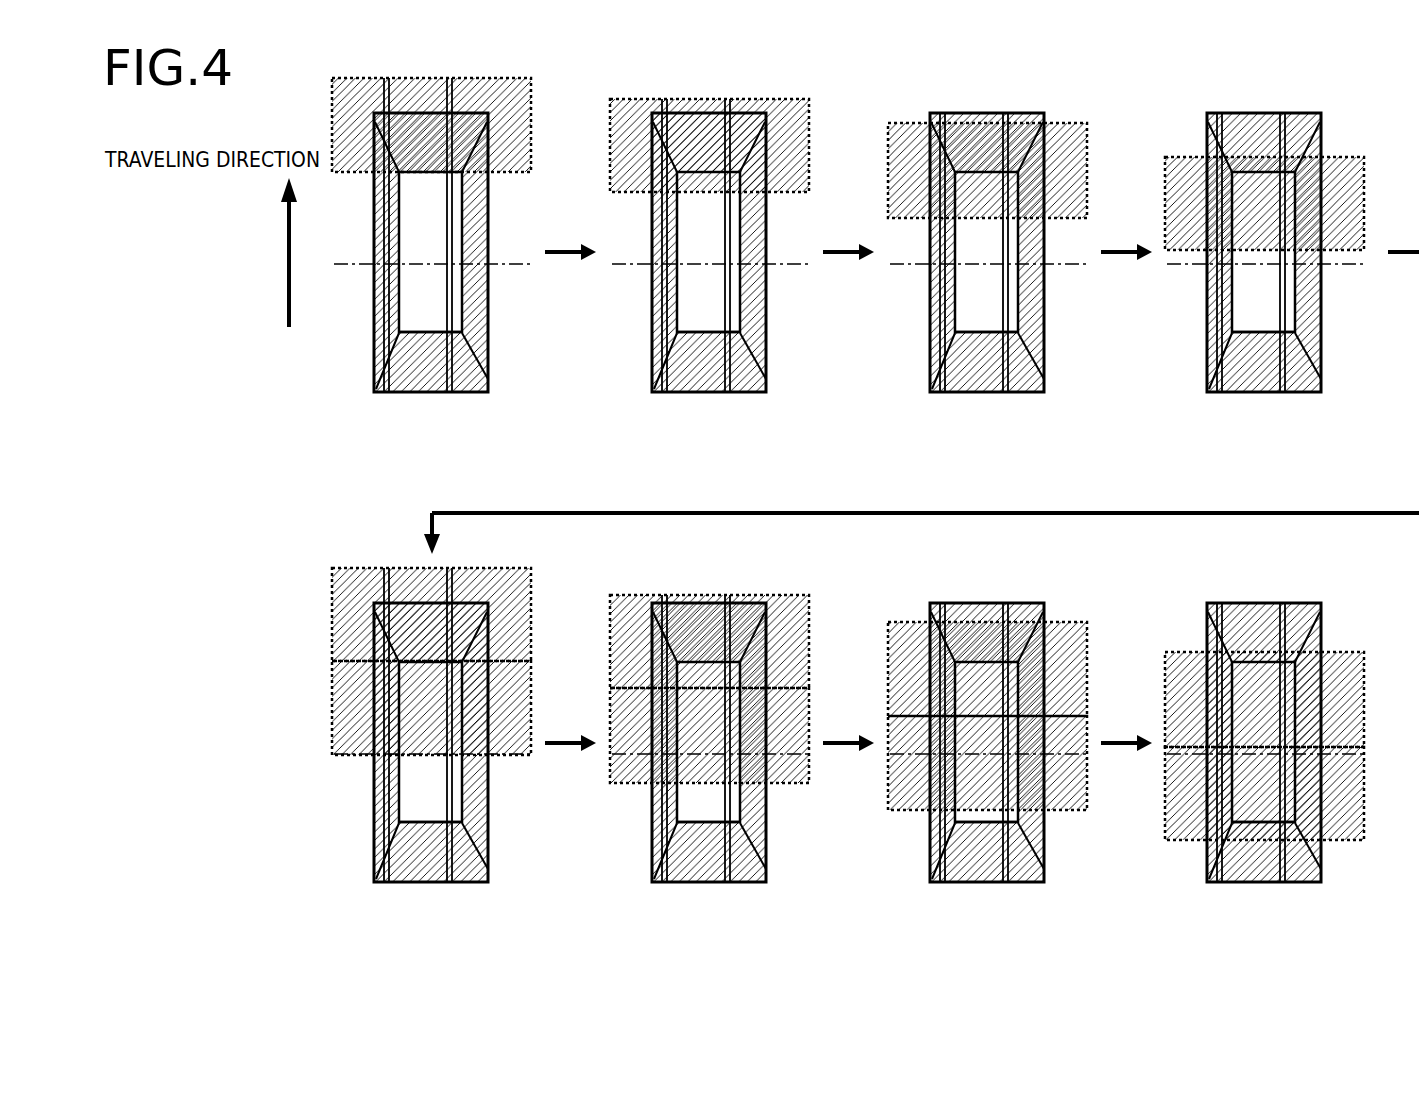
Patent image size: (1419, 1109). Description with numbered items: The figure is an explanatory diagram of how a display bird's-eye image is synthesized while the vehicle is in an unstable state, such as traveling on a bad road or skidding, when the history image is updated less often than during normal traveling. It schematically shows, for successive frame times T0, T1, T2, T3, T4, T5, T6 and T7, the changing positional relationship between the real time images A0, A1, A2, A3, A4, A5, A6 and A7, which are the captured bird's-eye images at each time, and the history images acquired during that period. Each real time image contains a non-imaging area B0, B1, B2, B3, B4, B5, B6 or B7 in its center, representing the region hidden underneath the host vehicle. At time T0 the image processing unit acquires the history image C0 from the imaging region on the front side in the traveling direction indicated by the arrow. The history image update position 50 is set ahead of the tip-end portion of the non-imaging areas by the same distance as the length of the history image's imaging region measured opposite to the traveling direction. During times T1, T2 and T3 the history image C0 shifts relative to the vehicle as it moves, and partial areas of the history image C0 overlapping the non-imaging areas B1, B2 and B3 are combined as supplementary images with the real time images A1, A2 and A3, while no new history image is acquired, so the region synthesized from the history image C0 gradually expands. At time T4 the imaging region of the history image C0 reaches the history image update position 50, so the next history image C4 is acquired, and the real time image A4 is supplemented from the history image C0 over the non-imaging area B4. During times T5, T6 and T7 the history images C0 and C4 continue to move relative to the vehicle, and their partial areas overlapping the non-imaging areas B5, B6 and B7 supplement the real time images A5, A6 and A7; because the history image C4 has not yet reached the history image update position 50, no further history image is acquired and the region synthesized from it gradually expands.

The history image update position 50 is at (344, 268).
The real time image A0 is at (488, 380).
The real time image A1 is at (766, 380).
The real time image A2 is at (1044, 380).
The real time image A3 is at (1321, 380).
The real time image A4 is at (488, 872).
The real time image A5 is at (766, 872).
The real time image A6 is at (1044, 872).
The real time image A7 is at (1321, 872).
The non-imaging area B0 is at (450, 316).
The non-imaging area B1 is at (728, 316).
The non-imaging area B2 is at (1006, 316).
The non-imaging area B3 is at (1283, 316).
The non-imaging area B4 is at (450, 814).
The non-imaging area B5 is at (728, 814).
The non-imaging area B6 is at (985, 818).
The non-imaging area B7 is at (1248, 816).
The history image C0 is at (332, 119).
The history image C4 is at (332, 606).
The time T0 is at (433, 406).
The time T1 is at (711, 406).
The time T2 is at (989, 406).
The time T3 is at (1266, 406).
The time T4 is at (433, 896).
The time T5 is at (711, 896).
The time T6 is at (989, 896).
The time T7 is at (1266, 896).